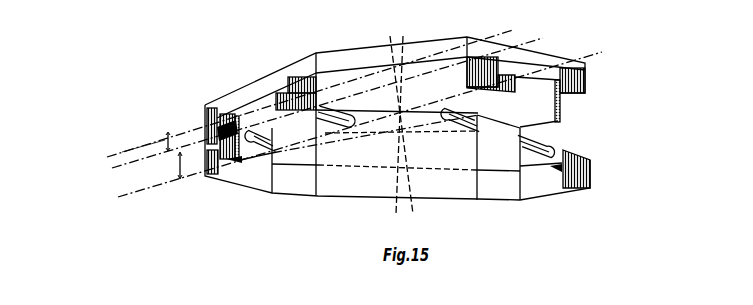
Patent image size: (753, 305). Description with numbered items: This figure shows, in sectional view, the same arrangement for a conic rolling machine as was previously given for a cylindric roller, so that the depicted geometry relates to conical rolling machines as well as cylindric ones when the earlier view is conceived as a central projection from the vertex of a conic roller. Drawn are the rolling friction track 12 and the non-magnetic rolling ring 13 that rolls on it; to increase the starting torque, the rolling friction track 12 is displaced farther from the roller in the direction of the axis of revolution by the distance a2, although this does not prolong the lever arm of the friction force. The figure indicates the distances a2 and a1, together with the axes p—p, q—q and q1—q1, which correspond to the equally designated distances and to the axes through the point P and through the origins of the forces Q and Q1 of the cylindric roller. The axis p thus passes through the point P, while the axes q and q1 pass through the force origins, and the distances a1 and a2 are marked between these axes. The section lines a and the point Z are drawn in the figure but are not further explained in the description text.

The rolling friction track 12 is at (588, 161).
The non-magnetic rolling ring 13 is at (563, 112).
The point P is at (241, 163).
The axis p— p is at (359, 123).
The axis q— q is at (325, 103).
The axis q1— q1 is at (311, 93).
The section plane a is at (400, 127).
The distance a1 is at (143, 151).
The distance a2 is at (166, 165).
The intersection point Z is at (407, 120).